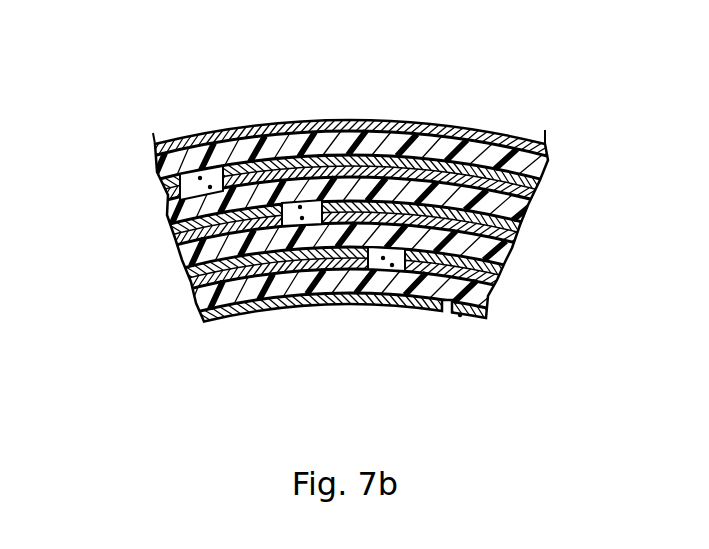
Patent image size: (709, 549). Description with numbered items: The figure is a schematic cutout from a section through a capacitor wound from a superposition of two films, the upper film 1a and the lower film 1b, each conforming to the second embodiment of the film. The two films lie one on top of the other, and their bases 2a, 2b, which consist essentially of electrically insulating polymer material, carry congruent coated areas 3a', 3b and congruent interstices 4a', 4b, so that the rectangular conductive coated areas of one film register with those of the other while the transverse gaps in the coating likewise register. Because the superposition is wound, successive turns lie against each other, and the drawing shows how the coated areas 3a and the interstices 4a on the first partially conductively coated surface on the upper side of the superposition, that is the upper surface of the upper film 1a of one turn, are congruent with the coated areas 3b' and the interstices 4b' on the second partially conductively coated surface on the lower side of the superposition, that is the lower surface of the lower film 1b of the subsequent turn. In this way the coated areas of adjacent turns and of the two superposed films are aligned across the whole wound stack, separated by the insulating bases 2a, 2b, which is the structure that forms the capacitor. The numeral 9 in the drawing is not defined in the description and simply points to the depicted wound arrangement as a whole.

The upper film 1a is at (157, 172).
The lower film 1b is at (167, 215).
The base of upper film 2a is at (497, 160).
The base of lower film 2b is at (478, 205).
The coated areas on upper surface of upper film 3a is at (354, 148).
The coated areas of upper film facing lower film 3a' is at (345, 233).
The coated areas of lower film 3b is at (357, 233).
The coated areas on lower surface of lower film 3b' is at (345, 311).
The interstices on upper surface of upper film 4a is at (295, 310).
The interstices of upper film facing lower film 4a' is at (259, 123).
The interstices of lower film 4b is at (285, 334).
The interstices on lower surface of lower film 4b' is at (387, 233).
The laminated structure 9 is at (586, 100).